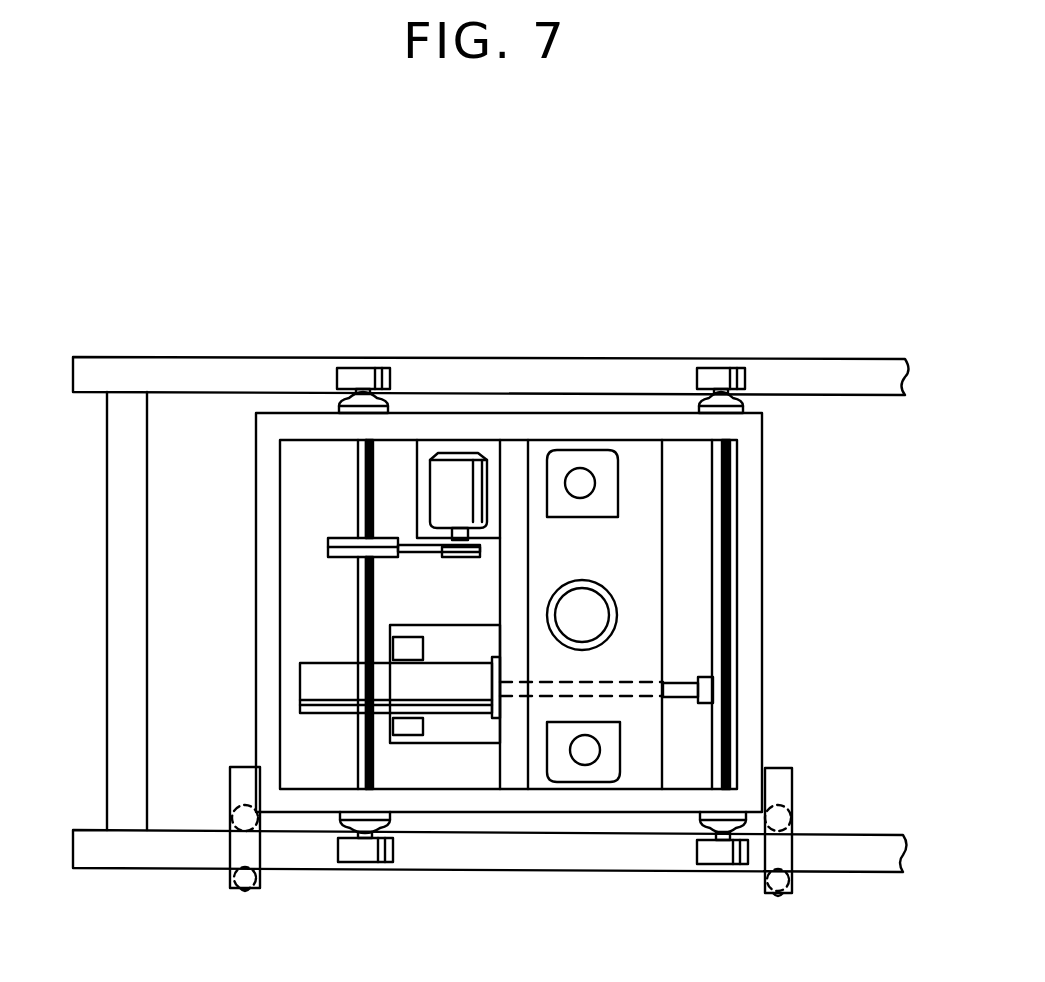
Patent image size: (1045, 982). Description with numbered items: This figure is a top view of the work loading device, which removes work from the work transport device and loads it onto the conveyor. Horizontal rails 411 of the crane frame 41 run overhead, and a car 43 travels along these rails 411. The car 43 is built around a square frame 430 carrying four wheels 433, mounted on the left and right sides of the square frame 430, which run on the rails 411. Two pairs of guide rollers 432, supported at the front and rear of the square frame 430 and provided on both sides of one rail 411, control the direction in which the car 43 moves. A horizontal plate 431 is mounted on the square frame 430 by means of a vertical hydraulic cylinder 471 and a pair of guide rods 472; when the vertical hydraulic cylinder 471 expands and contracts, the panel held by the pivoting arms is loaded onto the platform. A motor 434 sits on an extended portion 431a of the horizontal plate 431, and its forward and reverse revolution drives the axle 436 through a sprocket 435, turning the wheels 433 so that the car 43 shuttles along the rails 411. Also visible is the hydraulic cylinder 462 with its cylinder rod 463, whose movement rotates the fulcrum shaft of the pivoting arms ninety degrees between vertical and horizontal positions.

The crane frame 41 is at (870, 872).
The rails 411 is at (818, 372).
The car 43 is at (762, 515).
The square frame 430 is at (762, 619).
The horizontal plate 431 is at (650, 587).
The extended portion 431a is at (425, 448).
The guide rollers 432 is at (232, 805).
The wheels 433 is at (360, 378).
The motor 434 is at (457, 468).
The sprocket 435 is at (331, 558).
The axle 436 is at (509, 614).
The hydraulic cylinder 462 is at (310, 680).
The cylinder rod 463 is at (683, 692).
The vertical hydraulic cylinder 471 is at (593, 622).
The guide rods 472 is at (580, 478).